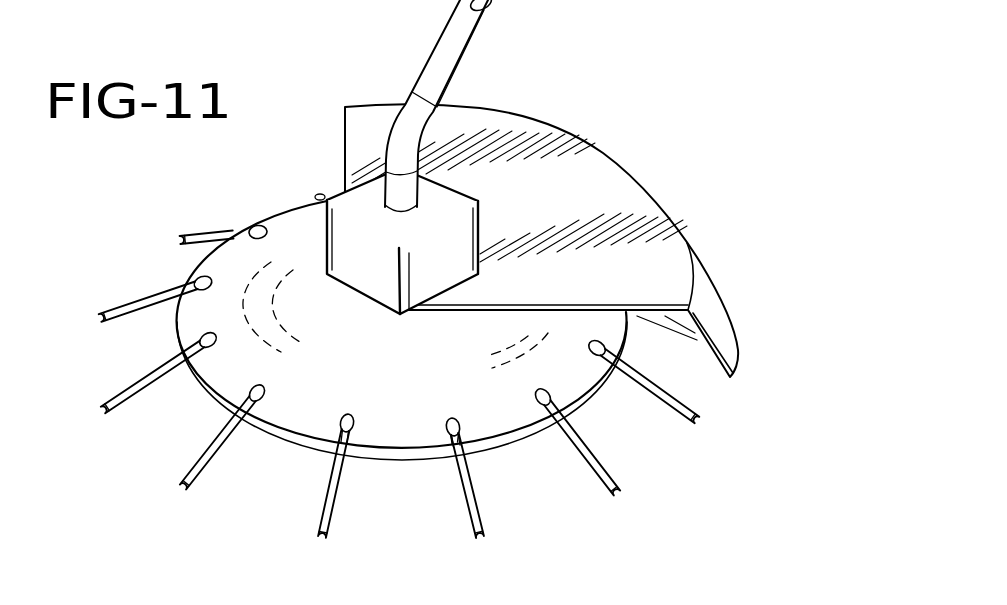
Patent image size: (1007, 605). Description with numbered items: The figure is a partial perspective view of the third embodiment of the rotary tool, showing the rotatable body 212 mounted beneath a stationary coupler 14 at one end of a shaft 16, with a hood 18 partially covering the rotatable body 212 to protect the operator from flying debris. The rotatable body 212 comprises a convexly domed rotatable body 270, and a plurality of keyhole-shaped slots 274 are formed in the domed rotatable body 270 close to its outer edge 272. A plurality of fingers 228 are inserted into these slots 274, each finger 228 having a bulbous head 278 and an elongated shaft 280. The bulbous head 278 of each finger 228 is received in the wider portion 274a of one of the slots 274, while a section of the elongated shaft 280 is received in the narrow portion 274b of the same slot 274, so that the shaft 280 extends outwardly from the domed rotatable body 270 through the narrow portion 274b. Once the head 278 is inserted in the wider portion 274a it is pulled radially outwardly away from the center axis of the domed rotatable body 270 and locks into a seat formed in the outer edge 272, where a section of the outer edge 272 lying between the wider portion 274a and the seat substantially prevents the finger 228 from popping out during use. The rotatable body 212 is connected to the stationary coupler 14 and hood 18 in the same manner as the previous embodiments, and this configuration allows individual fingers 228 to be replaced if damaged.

The stationary coupler 14 is at (338, 192).
The shaft 16 is at (434, 41).
The hood 18 is at (606, 155).
The rotatable body 212 is at (411, 393).
The fingers 228 is at (406, 409).
The convexly domed rotatable body 270 is at (512, 330).
The outer edge 272 is at (520, 444).
The keyhole-shaped slots 274 is at (400, 337).
The wider portion 274a is at (453, 418).
The narrow portion 274b is at (486, 410).
The bulbous head 278 is at (344, 437).
The elongated shaft 280 is at (588, 442).